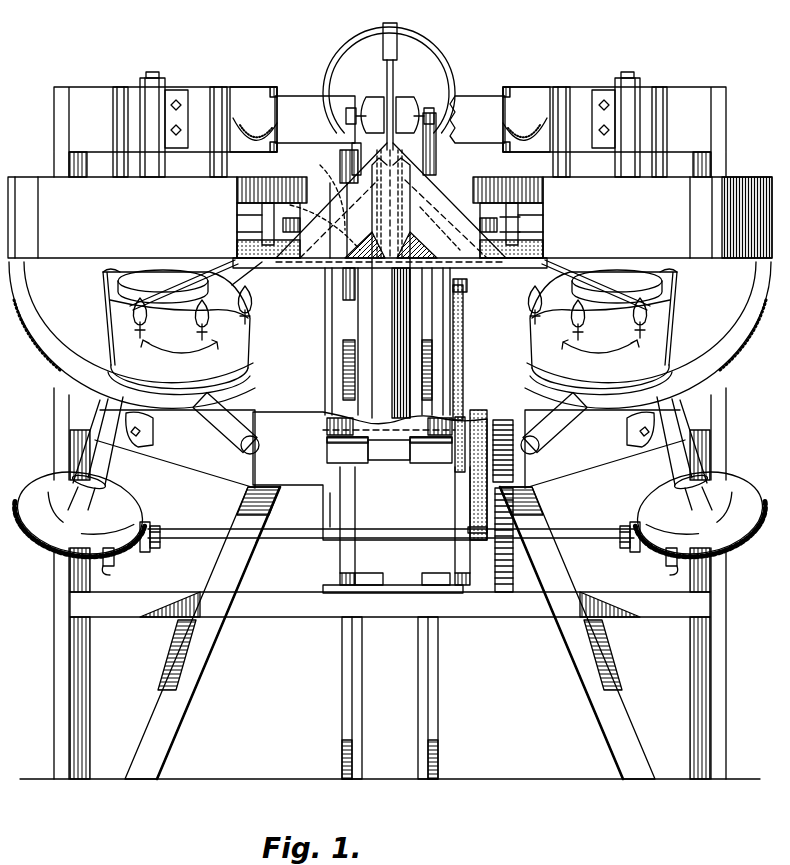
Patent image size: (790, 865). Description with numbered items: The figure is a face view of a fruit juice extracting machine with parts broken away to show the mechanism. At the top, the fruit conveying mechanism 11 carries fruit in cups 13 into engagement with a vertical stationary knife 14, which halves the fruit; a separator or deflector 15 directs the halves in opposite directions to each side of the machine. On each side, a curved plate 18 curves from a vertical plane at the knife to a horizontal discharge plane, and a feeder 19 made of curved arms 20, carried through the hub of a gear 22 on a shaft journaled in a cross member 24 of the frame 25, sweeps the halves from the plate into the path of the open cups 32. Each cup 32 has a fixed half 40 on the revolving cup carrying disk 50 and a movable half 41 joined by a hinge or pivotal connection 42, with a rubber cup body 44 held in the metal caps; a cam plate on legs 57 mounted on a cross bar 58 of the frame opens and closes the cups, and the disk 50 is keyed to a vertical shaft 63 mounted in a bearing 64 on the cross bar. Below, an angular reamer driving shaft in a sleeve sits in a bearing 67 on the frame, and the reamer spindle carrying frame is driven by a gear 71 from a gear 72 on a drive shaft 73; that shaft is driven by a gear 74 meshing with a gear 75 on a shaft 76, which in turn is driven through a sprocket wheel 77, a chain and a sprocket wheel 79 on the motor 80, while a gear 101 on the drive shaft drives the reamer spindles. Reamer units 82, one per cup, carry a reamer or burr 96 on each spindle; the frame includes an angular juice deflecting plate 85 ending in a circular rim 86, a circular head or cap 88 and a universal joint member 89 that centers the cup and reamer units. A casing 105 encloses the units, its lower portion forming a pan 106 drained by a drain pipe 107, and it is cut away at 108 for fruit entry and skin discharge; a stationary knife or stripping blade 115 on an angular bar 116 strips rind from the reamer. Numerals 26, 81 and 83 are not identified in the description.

The fruit conveying mechanism 11 is at (426, 82).
The cups 13 is at (405, 95).
The vertical stationary knife 14 is at (392, 75).
The separator or deflector 15 is at (360, 133).
The curved plate 18 is at (345, 157).
The feeder 19 is at (320, 215).
The curved arms 20 is at (318, 226).
The gear 22 is at (410, 250).
The cross member 24 is at (430, 250).
The frame 25 is at (54, 128).
The conduit 26 is at (320, 195).
The cups 32 is at (250, 232).
The fixed half 40 is at (525, 235).
The movable half 41 is at (530, 218).
The hinge or pivotal connection 42 is at (262, 208).
The cup body 44 is at (278, 285).
The revolving cup carrying disk 50 is at (250, 217).
The legs 57 is at (113, 108).
The cross bar 58 is at (245, 97).
The vertical shaft 63 is at (153, 75).
The bearing 64 is at (147, 95).
The bearing 67 is at (140, 420).
The gear 71 is at (48, 480).
The gear 72 is at (155, 525).
The drive shaft 73 is at (210, 528).
The gear 74 is at (495, 572).
The gear 75 is at (503, 412).
The shaft 76 is at (385, 462).
The sprocket wheel 77 is at (478, 412).
The sprocket wheel 79 is at (470, 505).
The motor 80 is at (395, 517).
The plate 81 is at (448, 220).
The reamer units 82 is at (210, 345).
The strip 83 is at (465, 365).
The juice deflecting plate 85 is at (120, 333).
The circular rim 86 is at (122, 358).
The circular head or cap 88 is at (112, 292).
The universal joint member 89 is at (128, 275).
The reamer or burr 96 is at (188, 330).
The gear 101 is at (668, 558).
The casing 105 is at (390, 217).
The pan 106 is at (40, 343).
The drain pipe 107 is at (230, 438).
The cut away 108 is at (287, 330).
The knife or stripping blade 115 is at (152, 278).
The bar 116 is at (271, 289).